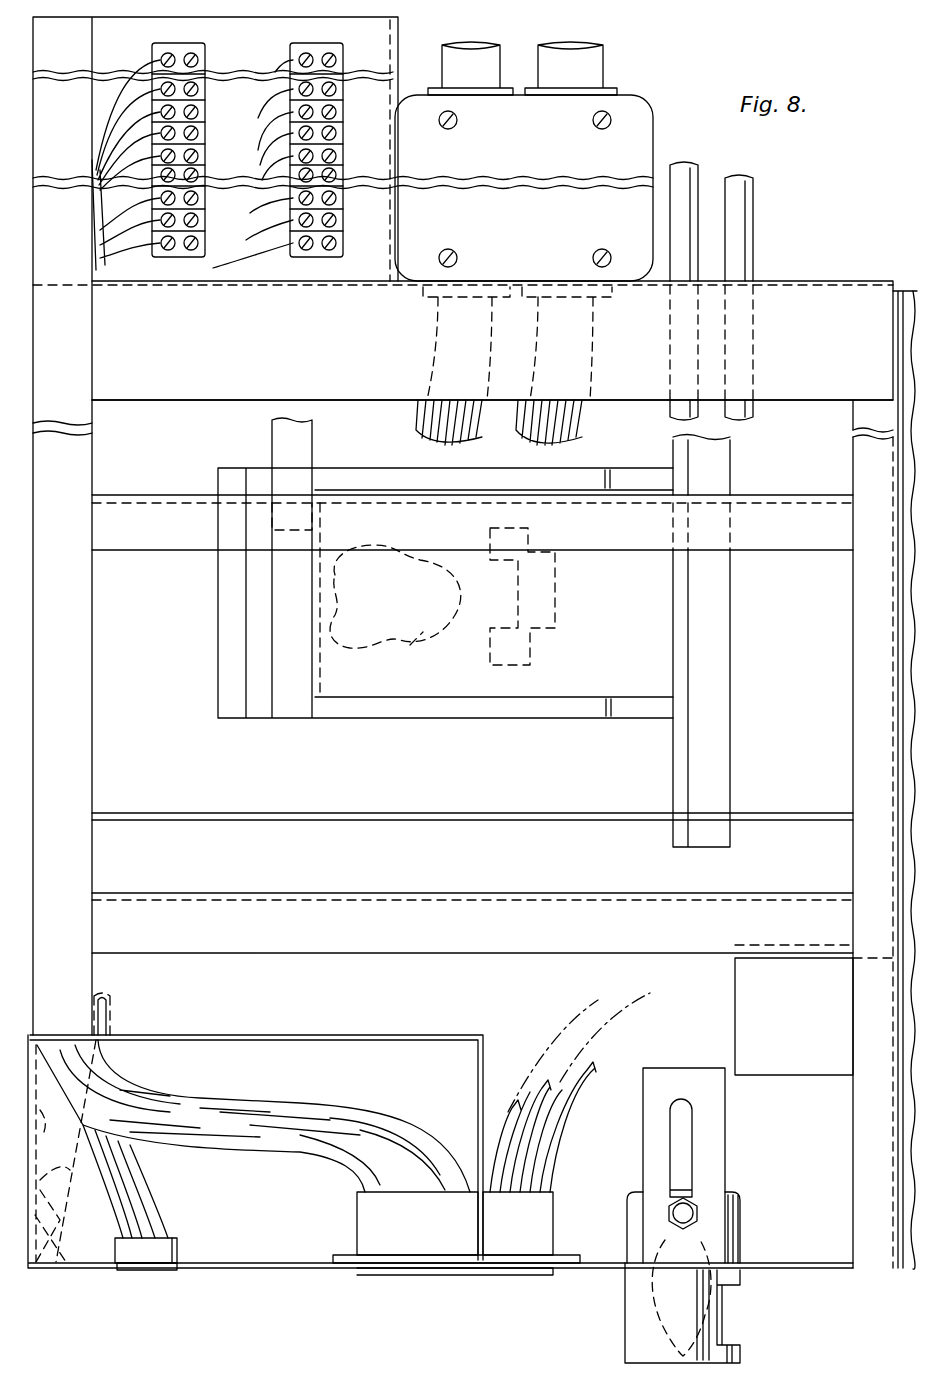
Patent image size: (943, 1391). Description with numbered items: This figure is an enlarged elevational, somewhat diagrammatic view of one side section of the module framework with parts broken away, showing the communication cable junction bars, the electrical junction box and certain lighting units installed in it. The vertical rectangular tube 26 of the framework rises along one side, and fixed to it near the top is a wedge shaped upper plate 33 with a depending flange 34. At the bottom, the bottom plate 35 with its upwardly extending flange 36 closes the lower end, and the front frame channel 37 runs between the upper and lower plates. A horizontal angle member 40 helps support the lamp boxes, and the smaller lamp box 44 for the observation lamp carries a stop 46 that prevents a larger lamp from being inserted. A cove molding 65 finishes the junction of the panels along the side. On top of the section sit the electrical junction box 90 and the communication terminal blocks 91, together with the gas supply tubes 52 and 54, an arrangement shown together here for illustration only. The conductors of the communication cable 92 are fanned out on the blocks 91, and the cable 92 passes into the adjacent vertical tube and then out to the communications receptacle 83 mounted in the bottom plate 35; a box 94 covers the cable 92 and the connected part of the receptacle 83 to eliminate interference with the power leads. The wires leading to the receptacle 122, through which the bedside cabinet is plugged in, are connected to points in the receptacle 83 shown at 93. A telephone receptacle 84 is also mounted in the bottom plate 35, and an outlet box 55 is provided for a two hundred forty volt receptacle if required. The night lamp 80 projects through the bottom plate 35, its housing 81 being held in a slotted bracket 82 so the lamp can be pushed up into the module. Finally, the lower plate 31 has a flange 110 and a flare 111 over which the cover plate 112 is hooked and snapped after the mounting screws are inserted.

The rectangular tube 26 is at (68, 937).
The lower plate 31 is at (440, 1151).
The upper plate 33 is at (806, 282).
The flange 34 is at (775, 350).
The bottom plate 35 is at (432, 812).
The flange 36 is at (546, 870).
The front frame channel 37 is at (853, 720).
The horizontal angle member 40 is at (410, 647).
The lamp box 44 is at (634, 665).
The stop 46 is at (558, 597).
The supply tube 52 is at (694, 180).
The supply tube 54 is at (745, 224).
The outlet box 55 is at (803, 1025).
The cove molding 65 is at (908, 628).
The night lamp 80 is at (655, 1287).
The housing 81 is at (635, 1334).
The slotted bracket 82 is at (710, 1150).
The communications receptacle 83 is at (365, 1217).
The telephone receptacle 84 is at (178, 1243).
The electrical junction box 90 is at (539, 240).
The communication terminal blocks 91 is at (292, 50).
The communication cable 92 is at (263, 1105).
The connection points 93 is at (580, 1035).
The box 94 is at (382, 1035).
The flange 110 is at (108, 1012).
The flare 111 is at (62, 1224).
The cover plate 112 is at (77, 1173).
The receptacle 122 is at (545, 1210).